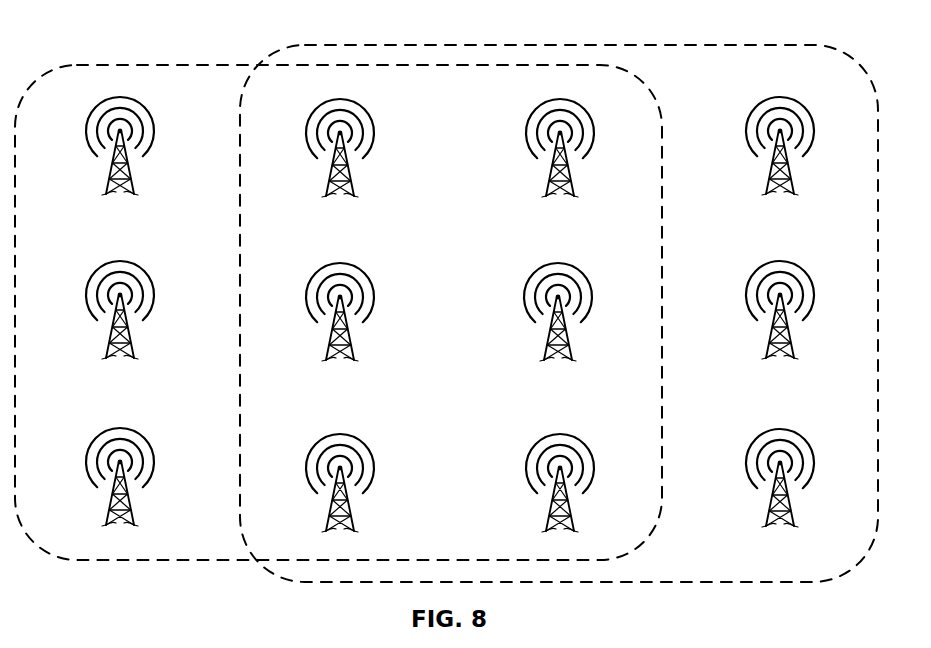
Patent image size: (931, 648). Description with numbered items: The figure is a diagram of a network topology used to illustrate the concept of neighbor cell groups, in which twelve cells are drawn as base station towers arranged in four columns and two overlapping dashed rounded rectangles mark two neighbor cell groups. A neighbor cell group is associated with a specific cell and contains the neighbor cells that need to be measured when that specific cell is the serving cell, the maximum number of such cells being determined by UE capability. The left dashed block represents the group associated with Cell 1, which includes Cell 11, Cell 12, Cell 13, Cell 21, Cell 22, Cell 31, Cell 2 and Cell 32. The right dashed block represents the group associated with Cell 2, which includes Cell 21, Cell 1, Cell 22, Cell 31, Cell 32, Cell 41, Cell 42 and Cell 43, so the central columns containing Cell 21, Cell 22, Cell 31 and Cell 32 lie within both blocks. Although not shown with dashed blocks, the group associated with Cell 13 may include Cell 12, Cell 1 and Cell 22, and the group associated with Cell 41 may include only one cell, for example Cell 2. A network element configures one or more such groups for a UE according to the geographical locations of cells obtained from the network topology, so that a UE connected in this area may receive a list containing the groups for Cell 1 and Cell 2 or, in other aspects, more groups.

The Cell 1 is at (340, 331).
The Cell 2 is at (558, 331).
The Cell 11 is at (120, 158).
The Cell 12 is at (120, 320).
The Cell 13 is at (120, 488).
The Cell 21 is at (340, 158).
The Cell 22 is at (340, 492).
The Cell 31 is at (560, 158).
The Cell 32 is at (560, 492).
The Cell 41 is at (780, 157).
The Cell 42 is at (780, 319).
The Cell 43 is at (780, 488).